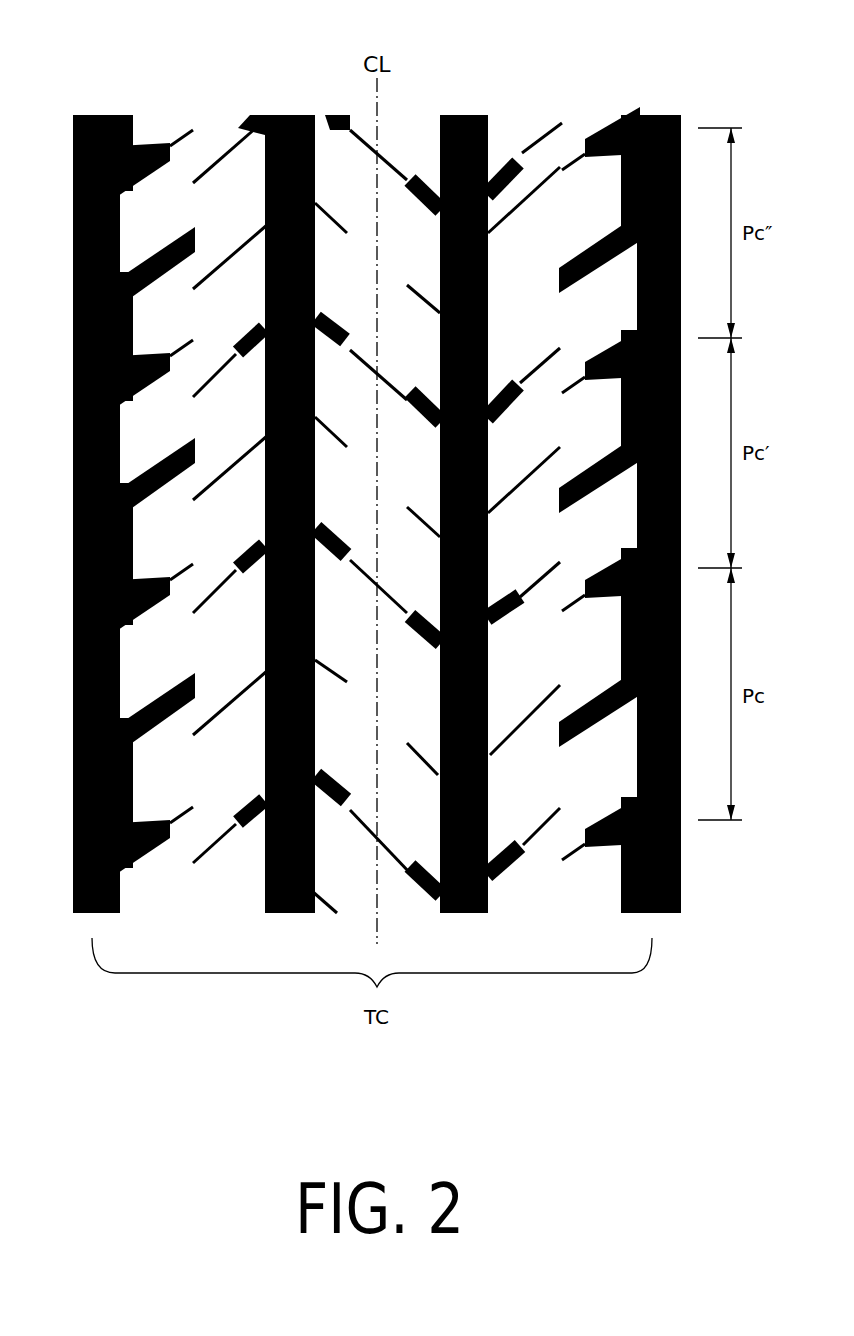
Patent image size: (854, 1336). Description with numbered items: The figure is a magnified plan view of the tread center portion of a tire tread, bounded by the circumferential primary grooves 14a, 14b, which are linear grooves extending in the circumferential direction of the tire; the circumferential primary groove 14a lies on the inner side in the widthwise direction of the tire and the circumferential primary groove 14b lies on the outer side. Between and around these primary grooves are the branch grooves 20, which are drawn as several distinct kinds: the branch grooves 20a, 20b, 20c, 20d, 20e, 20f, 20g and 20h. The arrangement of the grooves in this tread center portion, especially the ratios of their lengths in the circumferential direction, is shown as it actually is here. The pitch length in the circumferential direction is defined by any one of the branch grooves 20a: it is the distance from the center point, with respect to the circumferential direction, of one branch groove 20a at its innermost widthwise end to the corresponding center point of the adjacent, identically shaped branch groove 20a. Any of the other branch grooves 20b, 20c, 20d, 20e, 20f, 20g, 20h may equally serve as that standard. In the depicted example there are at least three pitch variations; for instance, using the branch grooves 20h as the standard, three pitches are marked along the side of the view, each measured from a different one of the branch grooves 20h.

The circumferential primary groove 14a is at (290, 115).
The circumferential primary groove 14b is at (108, 115).
The branch grooves 20 is at (594, 830).
The branch groove 20a is at (147, 262).
The branch groove 20b is at (157, 580).
The branch groove 20c is at (247, 582).
The branch groove 20d is at (337, 530).
The branch groove 20e is at (420, 647).
The branch groove 20f is at (513, 645).
The branch groove 20g is at (593, 700).
The branch groove 20h is at (615, 332).